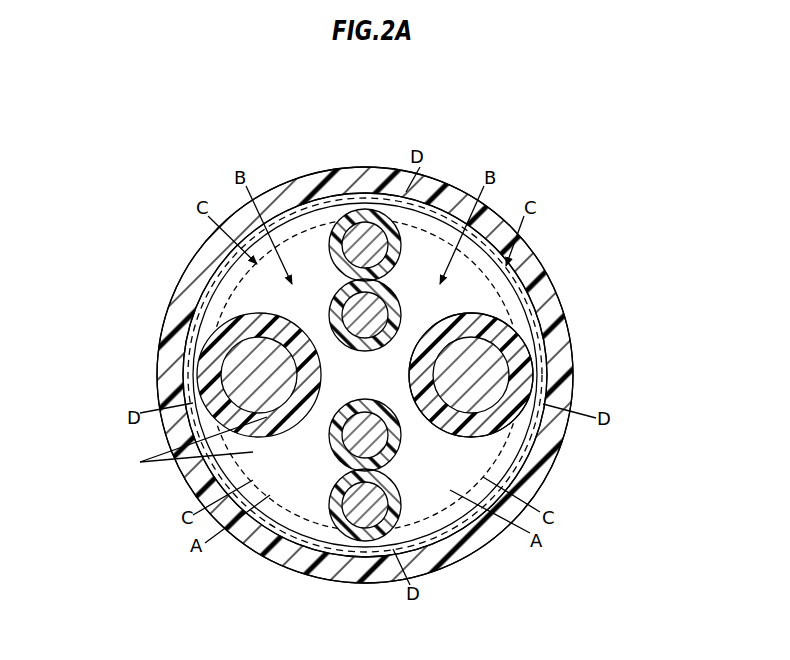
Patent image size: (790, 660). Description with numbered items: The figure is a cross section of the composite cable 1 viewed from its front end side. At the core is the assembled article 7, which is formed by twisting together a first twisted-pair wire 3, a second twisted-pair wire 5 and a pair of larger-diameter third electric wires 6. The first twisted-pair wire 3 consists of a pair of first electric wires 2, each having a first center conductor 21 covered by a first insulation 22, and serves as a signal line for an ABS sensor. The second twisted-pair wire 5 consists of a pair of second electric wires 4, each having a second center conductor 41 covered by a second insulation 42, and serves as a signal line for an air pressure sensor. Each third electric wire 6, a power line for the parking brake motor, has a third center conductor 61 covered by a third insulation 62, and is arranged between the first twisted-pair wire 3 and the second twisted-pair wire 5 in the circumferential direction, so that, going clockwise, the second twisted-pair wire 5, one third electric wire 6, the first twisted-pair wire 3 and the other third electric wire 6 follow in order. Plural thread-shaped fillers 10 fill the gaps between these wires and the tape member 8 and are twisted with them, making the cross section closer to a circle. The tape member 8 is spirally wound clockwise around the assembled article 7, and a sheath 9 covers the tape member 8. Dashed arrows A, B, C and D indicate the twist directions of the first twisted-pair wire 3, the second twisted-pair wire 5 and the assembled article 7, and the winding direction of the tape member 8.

The composite cable 1 is at (240, 120).
The first electric wire 2 is at (491, 550).
The first twisted-pair wire 3 is at (378, 515).
The second electric wire 4 is at (500, 199).
The second twisted-pair wire 5 is at (392, 231).
The third electric wire 6 is at (435, 334).
The assembled article 7 is at (467, 452).
The tape member 8 is at (527, 447).
The sheath 9 is at (557, 303).
The filler 10 is at (190, 448).
The first center conductor 21 is at (363, 520).
The first insulation 22 is at (378, 540).
The second center conductor 41 is at (362, 230).
The second insulation 42 is at (383, 213).
The third center conductor 61 is at (492, 358).
The third insulation 62 is at (524, 370).